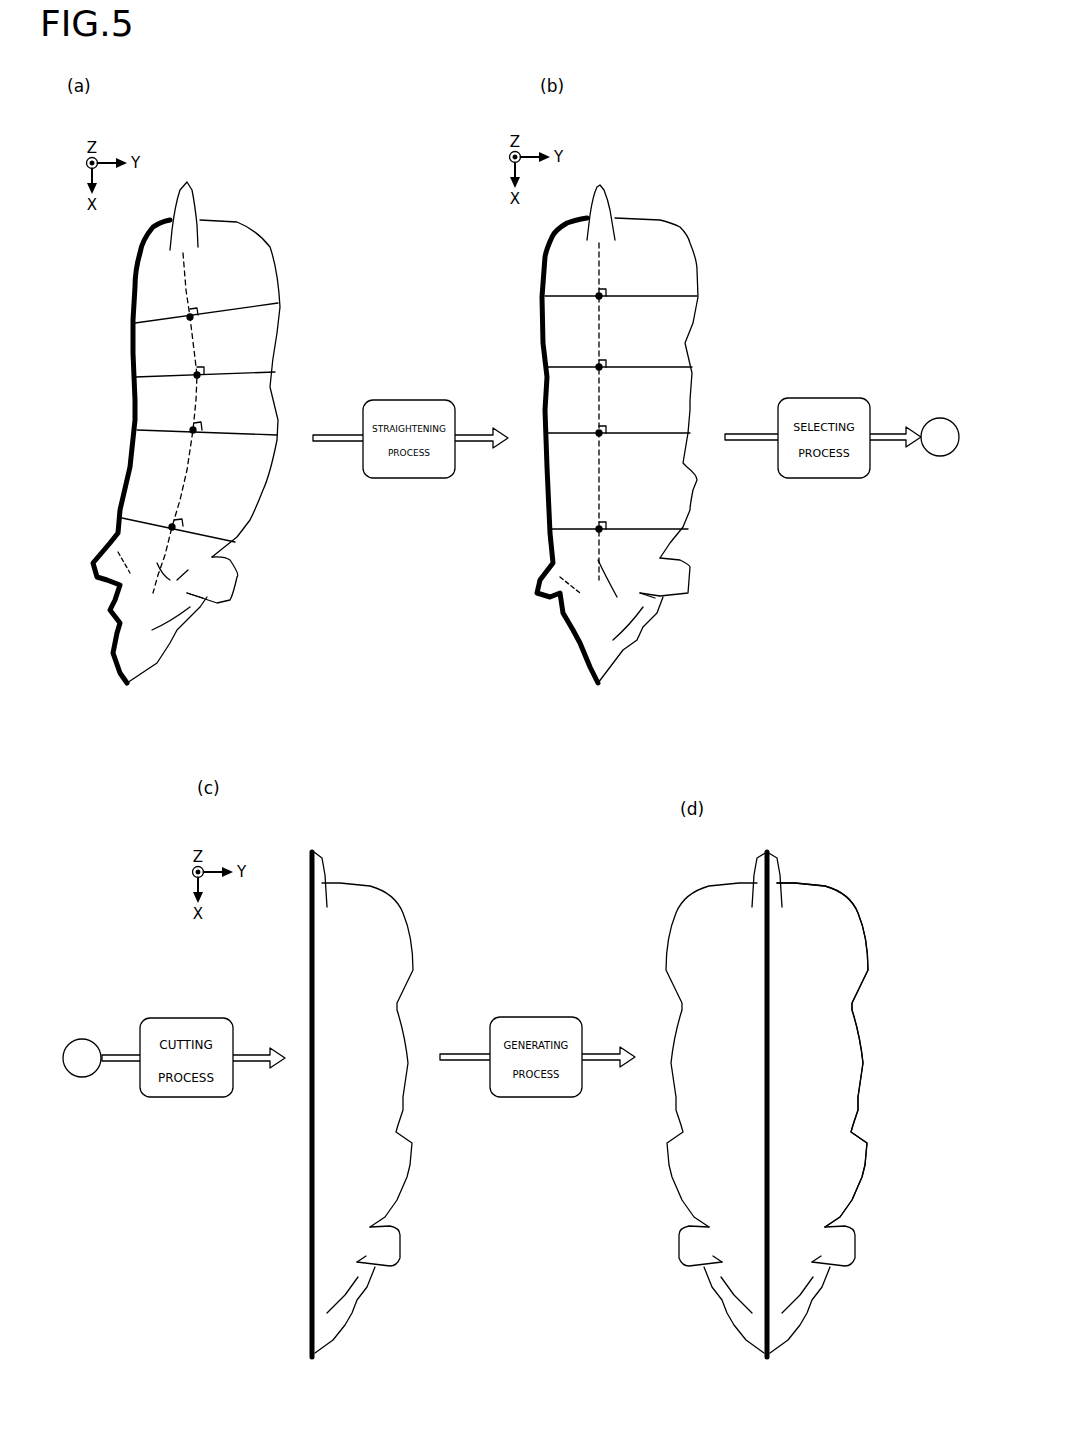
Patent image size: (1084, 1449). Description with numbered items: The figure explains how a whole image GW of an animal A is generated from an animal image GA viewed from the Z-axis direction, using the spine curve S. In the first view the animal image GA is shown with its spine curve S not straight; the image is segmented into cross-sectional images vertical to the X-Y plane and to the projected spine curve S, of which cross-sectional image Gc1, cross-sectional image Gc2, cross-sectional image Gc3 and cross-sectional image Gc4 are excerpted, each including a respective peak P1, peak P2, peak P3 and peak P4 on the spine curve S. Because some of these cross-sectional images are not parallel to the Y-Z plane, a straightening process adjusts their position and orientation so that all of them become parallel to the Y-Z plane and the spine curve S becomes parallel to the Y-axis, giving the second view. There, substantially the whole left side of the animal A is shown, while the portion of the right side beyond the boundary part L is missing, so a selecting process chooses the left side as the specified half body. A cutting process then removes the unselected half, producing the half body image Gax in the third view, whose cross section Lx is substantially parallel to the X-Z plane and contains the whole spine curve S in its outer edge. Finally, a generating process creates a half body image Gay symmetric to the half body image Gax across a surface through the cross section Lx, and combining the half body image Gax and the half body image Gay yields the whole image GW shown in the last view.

The animal image GA is at (203, 220).
The boundary part L is at (132, 313).
The cross-sectional image Gc1 is at (260, 305).
The cross-sectional image Gc2 is at (248, 370).
The cross-sectional image Gc3 is at (222, 433).
The cross-sectional image Gc4 is at (200, 528).
The peak P1 is at (381, 296).
The peak P2 is at (383, 361).
The peak P3 is at (383, 422).
The peak P4 is at (376, 515).
The spine curve S is at (767, 983).
The animal A is at (511, 747).
The half body image Gax is at (380, 892).
The half body image Gay is at (703, 890).
The cross section Lx is at (312, 1217).
The whole image GW is at (793, 1102).